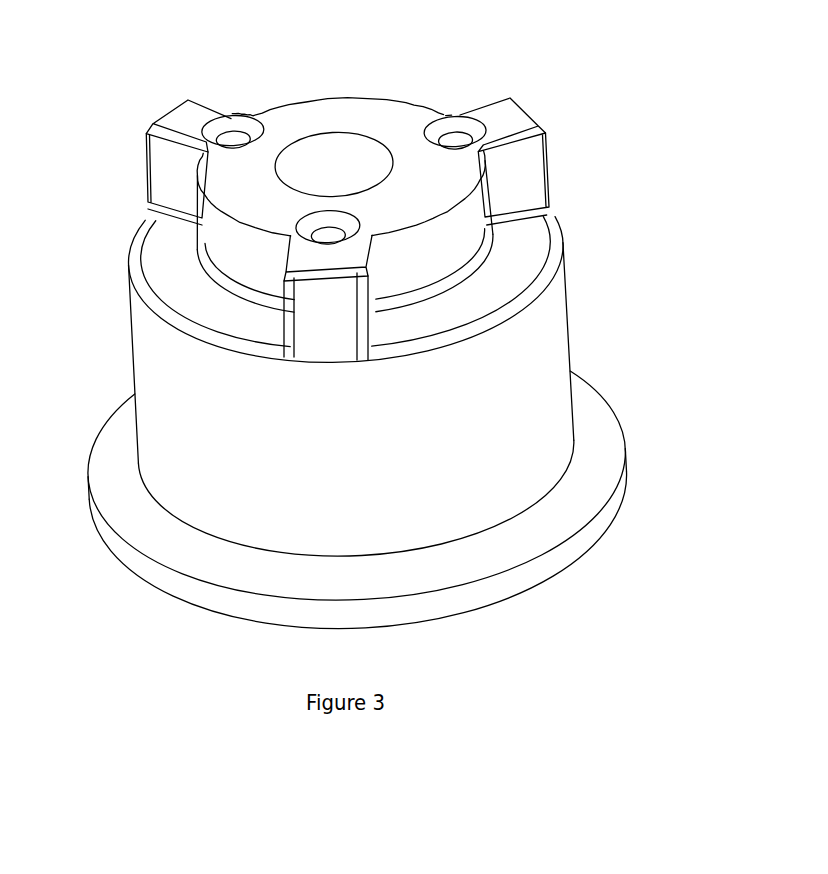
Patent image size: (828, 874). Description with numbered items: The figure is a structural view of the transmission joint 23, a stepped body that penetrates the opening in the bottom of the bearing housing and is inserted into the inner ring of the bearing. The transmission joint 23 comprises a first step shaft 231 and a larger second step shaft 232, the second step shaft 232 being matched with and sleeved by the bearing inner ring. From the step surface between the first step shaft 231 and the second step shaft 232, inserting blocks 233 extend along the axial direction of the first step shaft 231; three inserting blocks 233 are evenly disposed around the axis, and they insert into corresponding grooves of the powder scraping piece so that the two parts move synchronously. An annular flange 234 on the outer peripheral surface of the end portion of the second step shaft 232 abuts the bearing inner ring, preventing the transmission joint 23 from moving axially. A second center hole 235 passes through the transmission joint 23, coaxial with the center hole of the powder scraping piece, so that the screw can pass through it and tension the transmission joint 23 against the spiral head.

The transmission joint 23 is at (340, 455).
The first step shaft 231 is at (235, 250).
The second step shaft 232 is at (537, 382).
The inserting block 233 is at (165, 177).
The annular flange 234 is at (552, 523).
The second center hole 235 is at (334, 162).